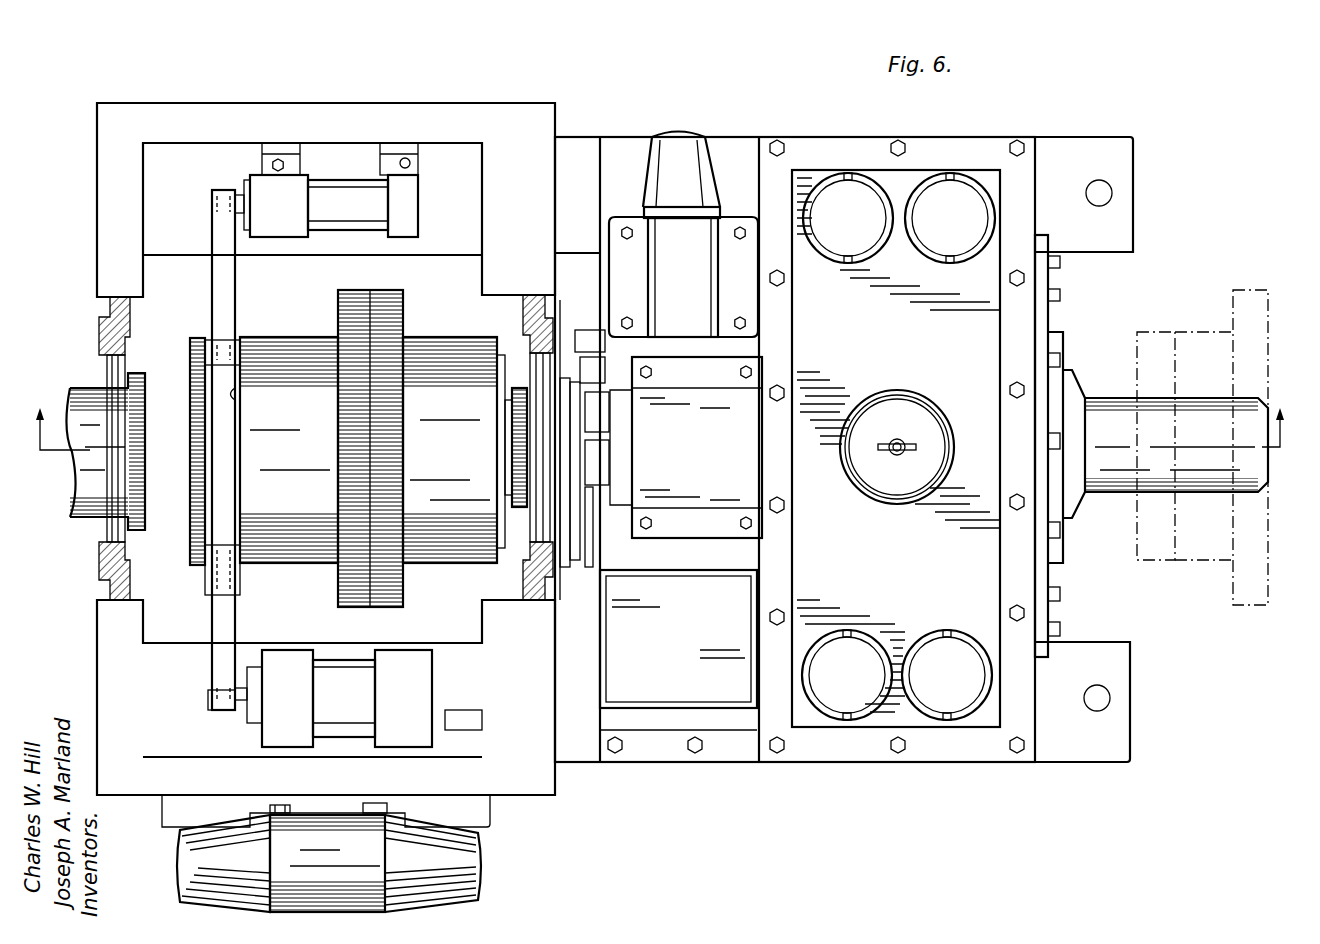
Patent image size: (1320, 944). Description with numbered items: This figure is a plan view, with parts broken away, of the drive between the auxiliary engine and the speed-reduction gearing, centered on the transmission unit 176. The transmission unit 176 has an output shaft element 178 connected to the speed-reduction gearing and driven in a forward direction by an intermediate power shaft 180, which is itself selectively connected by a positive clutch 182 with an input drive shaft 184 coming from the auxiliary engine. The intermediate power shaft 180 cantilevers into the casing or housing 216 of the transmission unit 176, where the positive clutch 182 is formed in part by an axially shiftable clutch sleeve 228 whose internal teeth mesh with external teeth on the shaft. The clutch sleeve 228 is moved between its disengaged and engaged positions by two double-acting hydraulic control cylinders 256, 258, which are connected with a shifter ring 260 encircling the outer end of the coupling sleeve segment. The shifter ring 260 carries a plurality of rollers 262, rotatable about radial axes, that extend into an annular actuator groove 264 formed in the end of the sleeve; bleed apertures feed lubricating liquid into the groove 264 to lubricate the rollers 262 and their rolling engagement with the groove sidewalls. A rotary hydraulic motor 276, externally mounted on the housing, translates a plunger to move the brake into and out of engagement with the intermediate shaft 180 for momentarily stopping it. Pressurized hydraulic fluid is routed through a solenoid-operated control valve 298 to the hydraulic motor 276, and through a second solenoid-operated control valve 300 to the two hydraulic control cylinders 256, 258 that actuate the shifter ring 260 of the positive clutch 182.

The transmission unit 176 is at (583, 130).
The output shaft element 178 is at (1106, 398).
The intermediate power shaft 180 is at (512, 365).
The positive clutch 182 is at (414, 325).
The input drive shaft 184 is at (82, 388).
The casing or housing 216 is at (548, 787).
The axially shiftable clutch sleeve 228 is at (380, 567).
The double-acting hydraulic control cylinder 256 is at (355, 188).
The double-acting hydraulic control cylinder 258 is at (355, 688).
The shifter ring 260 is at (225, 447).
The rollers 262 is at (205, 340).
The annular actuator groove 264 is at (237, 400).
The rotary hydraulic motor 276 is at (750, 452).
The solenoid-operated control valve 298 is at (708, 170).
The solenoid-operated control valve 300 is at (500, 883).